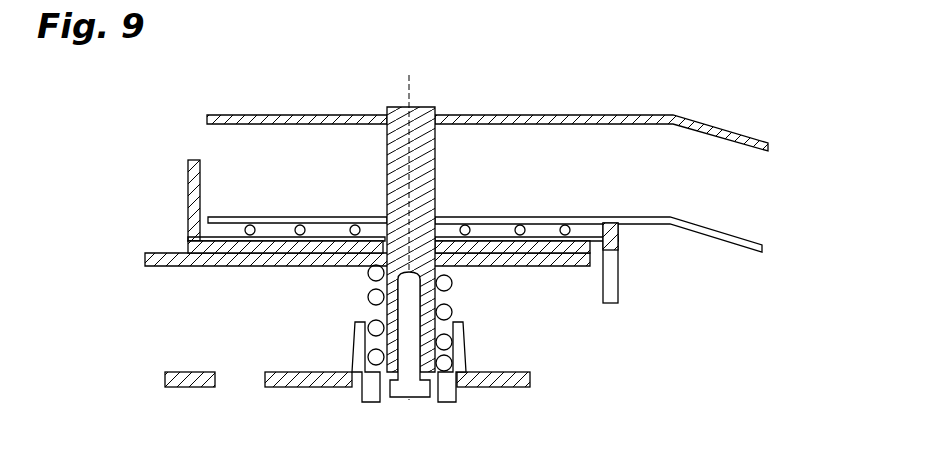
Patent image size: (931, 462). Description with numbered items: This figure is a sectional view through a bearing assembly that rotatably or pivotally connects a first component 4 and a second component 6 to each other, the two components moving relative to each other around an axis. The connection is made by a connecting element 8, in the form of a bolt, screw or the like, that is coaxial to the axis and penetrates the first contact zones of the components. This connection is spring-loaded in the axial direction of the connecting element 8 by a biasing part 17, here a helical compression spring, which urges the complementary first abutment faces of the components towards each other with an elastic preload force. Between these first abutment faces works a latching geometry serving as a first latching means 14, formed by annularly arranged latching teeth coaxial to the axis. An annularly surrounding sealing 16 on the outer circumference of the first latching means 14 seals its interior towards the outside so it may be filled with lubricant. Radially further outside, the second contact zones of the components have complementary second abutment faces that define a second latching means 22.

The first component 4 is at (700, 123).
The second component 6 is at (167, 253).
The connecting element 8 is at (393, 106).
The first latching means 14 is at (462, 217).
The sealing 16 is at (300, 258).
The biasing part 17 is at (447, 275).
The second latching means 22 is at (240, 232).